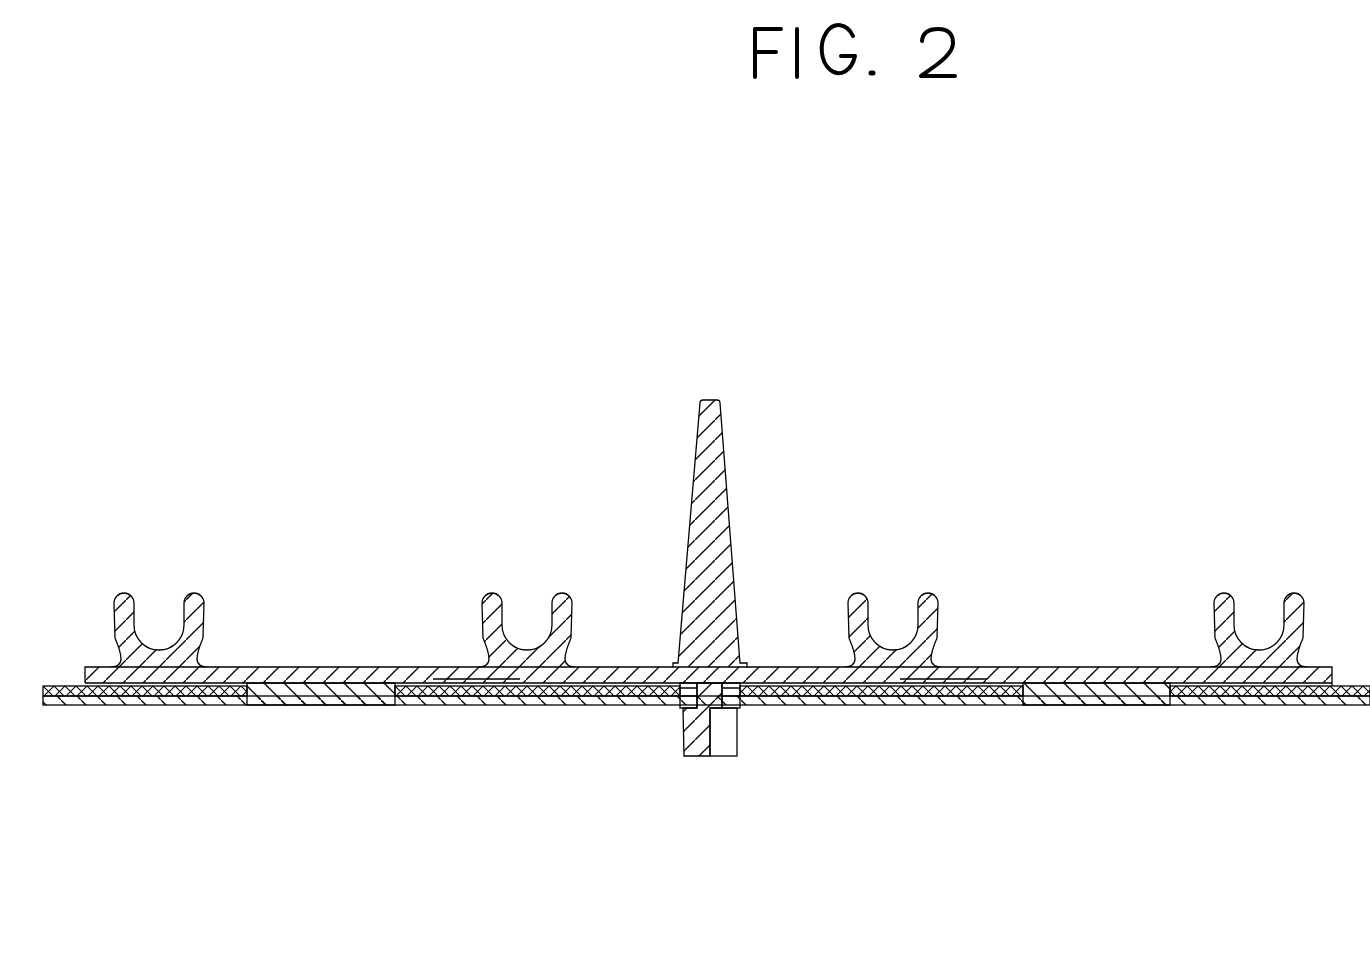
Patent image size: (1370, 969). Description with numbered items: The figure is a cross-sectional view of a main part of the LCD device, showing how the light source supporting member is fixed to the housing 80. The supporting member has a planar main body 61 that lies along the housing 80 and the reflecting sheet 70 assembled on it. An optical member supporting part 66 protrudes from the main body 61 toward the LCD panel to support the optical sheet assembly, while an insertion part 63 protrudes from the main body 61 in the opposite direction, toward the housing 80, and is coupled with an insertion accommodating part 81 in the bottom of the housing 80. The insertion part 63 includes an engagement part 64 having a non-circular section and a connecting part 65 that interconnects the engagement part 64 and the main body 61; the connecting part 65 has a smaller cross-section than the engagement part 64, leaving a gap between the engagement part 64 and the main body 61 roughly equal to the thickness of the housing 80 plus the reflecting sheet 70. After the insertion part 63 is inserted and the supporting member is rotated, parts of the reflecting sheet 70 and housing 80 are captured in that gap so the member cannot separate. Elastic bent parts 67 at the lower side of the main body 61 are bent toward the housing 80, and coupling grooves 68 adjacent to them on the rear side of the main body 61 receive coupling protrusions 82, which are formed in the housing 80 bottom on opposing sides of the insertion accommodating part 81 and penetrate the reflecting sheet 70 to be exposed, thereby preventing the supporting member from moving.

The main body 61 is at (801, 703).
The insertion part 63 is at (659, 789).
The engagement part 64 is at (695, 747).
The connecting part 65 is at (670, 706).
The optical member supporting part 66 is at (723, 432).
The elastic bent parts 67 is at (972, 697).
The coupling grooves 68 is at (1099, 697).
The reflecting sheet 70 is at (122, 705).
The housing 80 is at (195, 697).
The insertion accommodating part 81 is at (737, 710).
The coupling protrusions 82 is at (317, 686).